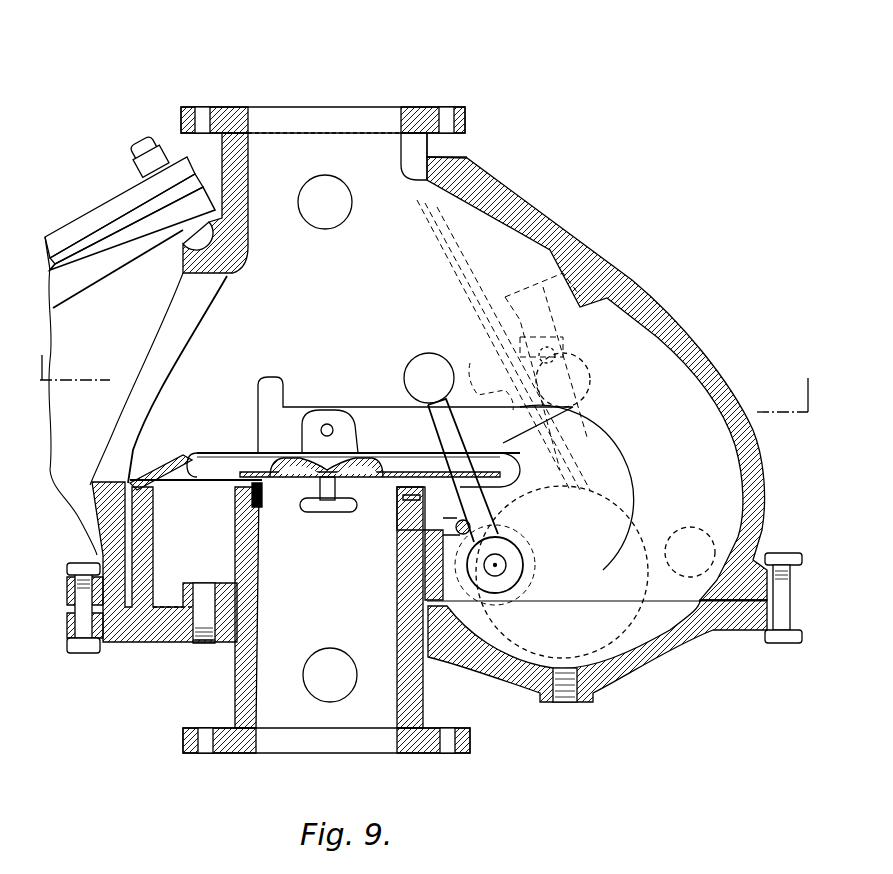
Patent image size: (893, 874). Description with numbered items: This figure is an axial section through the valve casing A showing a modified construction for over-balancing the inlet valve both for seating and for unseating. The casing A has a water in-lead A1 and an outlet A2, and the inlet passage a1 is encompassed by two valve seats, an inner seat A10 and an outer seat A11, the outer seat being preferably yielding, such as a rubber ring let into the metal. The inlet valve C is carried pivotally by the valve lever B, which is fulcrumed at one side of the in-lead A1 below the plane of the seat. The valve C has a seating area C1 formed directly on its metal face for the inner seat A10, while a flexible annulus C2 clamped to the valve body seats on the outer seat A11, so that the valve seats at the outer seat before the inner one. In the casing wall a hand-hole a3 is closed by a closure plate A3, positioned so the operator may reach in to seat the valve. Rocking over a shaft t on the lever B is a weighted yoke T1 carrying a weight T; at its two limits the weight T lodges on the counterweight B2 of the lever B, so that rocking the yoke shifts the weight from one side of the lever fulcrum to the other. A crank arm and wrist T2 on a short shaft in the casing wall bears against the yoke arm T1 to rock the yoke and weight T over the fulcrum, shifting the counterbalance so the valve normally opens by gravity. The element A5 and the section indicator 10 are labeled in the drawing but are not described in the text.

The valve casing A is at (630, 292).
The water in-lead A1 is at (255, 737).
The outlet A2 is at (318, 118).
The closure plate A3 is at (100, 205).
The hand-hole a3 is at (200, 300).
The inlet passage a1 is at (329, 607).
The bolt A5 is at (198, 652).
The inner valve seat A10 is at (275, 505).
The outer valve seat A11 is at (158, 505).
The valve lever B is at (325, 405).
The counterweight B2 is at (600, 430).
The inlet valve C is at (231, 475).
The seating area C1 is at (260, 473).
The flexible annulus C2 is at (145, 470).
The weight T is at (422, 360).
The weighted yoke T1 is at (436, 408).
The crank arm and wrist T2 is at (424, 535).
The shaft t is at (508, 578).
The section line 10 is at (426, 394).